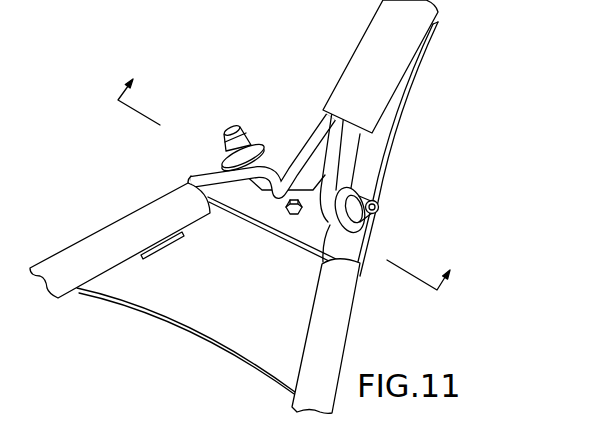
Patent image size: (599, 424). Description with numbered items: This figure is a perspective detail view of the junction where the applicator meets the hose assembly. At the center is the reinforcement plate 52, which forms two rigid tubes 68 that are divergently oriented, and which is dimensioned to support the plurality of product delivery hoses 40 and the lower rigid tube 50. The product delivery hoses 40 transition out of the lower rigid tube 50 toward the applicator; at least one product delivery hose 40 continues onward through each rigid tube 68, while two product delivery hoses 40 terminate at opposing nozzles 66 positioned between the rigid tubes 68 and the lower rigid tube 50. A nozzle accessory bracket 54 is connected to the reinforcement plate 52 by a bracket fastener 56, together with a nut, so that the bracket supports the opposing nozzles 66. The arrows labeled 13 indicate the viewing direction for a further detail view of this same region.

The view direction arrow 13 is at (293, 172).
The product delivery hose 40 is at (305, 158).
The lower rigid tube 50 is at (373, 45).
The reinforcement plate 52 is at (185, 299).
The nozzle accessory bracket 54 is at (313, 233).
The bracket fastener 56 is at (290, 203).
The nozzle 66 is at (222, 135).
The rigid tube 68 is at (108, 243).